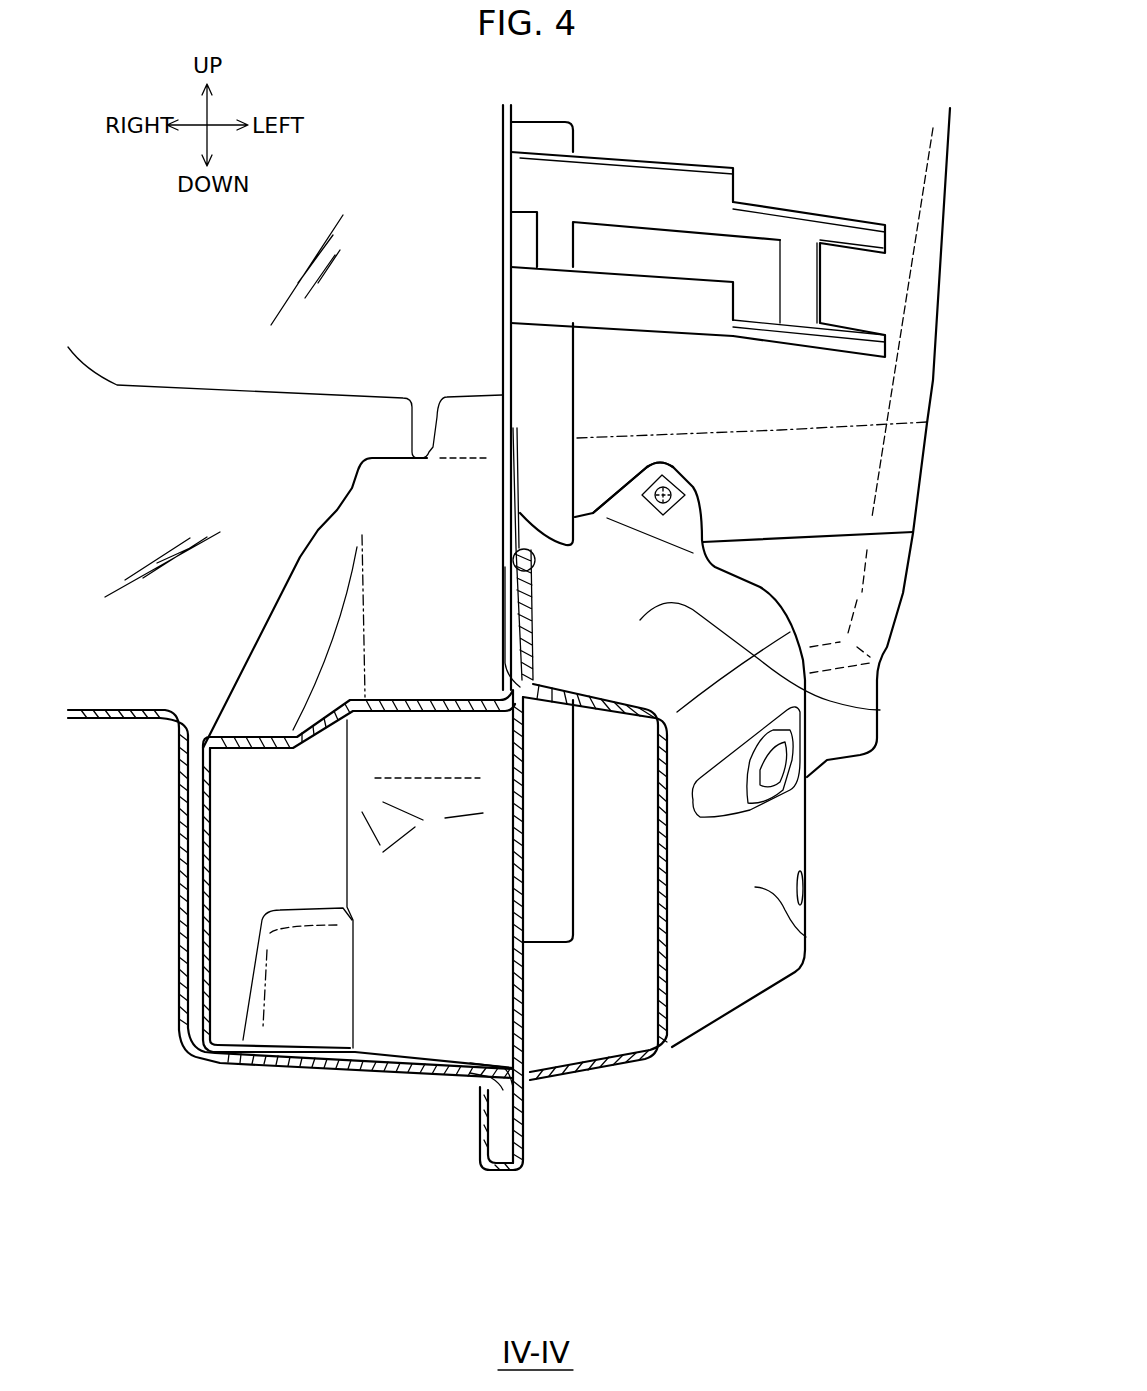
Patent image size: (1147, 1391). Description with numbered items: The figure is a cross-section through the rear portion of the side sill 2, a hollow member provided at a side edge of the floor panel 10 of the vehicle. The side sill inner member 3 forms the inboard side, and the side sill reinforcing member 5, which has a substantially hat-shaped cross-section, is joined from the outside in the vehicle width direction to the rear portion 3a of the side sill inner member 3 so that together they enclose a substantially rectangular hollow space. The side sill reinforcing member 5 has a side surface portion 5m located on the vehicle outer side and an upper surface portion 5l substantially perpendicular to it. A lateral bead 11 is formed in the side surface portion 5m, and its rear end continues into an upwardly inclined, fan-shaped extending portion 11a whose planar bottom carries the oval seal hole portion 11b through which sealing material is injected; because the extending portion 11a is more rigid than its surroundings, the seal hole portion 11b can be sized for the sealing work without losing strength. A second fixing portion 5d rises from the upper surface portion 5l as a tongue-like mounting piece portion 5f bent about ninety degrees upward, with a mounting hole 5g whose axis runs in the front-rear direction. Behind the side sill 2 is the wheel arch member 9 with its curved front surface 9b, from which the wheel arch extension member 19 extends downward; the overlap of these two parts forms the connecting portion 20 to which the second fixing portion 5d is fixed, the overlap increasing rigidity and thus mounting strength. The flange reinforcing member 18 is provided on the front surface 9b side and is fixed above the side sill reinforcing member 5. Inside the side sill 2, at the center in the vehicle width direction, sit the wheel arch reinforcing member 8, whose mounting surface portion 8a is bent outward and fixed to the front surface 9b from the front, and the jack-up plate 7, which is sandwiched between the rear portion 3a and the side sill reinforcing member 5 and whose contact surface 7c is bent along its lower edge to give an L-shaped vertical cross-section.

The side sill 2 is at (635, 1245).
The side sill inner member 3 is at (428, 1094).
The rear portion of the side sill inner member 3a is at (513, 568).
The side sill reinforcing member 5 is at (688, 1060).
The second fixing portion 5d is at (627, 474).
The mounting piece portion 5f is at (680, 463).
The mounting hole 5g is at (683, 505).
The upper surface portion 5l is at (880, 710).
The side surface portion 5m is at (807, 937).
The jack-up plate 7 is at (536, 1037).
The contact surface 7c is at (493, 1170).
The wheel arch reinforcing member 8 is at (503, 236).
The mounting surface portion 8a is at (550, 915).
The wheel arch member 9 is at (950, 336).
The front surface 9b is at (777, 400).
The floor panel 10 is at (140, 650).
The lateral bead 11 is at (732, 806).
The extending portion 11a is at (797, 755).
The seal hole portion 11b is at (773, 770).
The flange reinforcing member 18 is at (807, 205).
The wheel arch extension member 19 is at (827, 580).
The connecting portion 20 is at (700, 468).